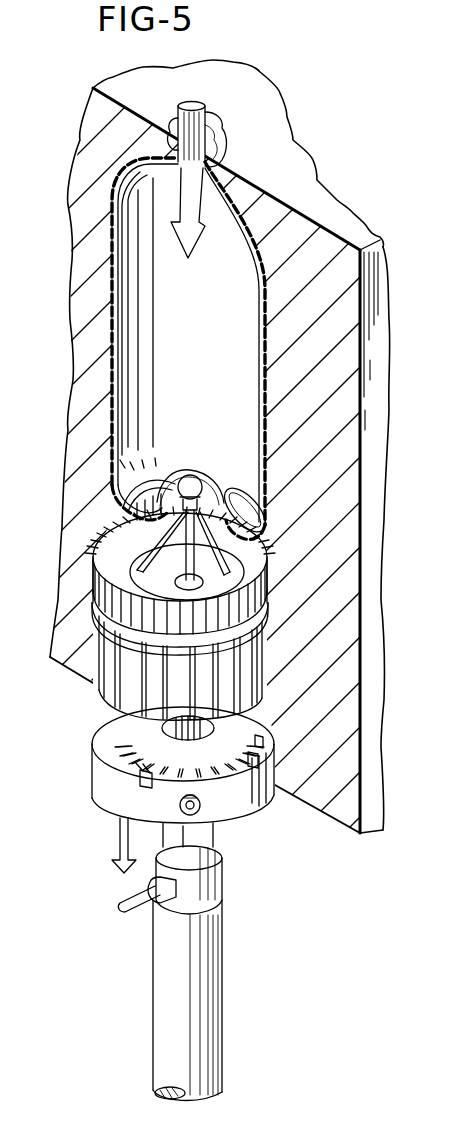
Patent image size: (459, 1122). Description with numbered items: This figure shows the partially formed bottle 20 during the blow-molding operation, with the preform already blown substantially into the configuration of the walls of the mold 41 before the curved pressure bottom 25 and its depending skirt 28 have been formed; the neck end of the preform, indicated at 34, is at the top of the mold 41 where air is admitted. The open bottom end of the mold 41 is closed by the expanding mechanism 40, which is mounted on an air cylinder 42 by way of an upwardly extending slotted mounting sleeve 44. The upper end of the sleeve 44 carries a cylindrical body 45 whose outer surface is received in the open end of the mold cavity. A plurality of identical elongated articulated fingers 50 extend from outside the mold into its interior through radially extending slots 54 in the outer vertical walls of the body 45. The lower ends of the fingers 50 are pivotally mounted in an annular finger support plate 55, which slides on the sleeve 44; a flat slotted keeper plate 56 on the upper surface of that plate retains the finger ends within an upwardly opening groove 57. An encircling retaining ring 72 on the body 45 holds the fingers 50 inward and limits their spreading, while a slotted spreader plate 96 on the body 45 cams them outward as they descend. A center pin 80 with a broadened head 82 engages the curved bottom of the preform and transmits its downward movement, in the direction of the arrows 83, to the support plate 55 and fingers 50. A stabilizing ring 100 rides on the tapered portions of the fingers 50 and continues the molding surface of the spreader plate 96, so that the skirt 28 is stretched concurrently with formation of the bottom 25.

The bottle 20 is at (271, 352).
The curved pressure bottom 25 is at (240, 516).
The skirt 28 is at (152, 493).
The bottle neck 34 is at (213, 128).
The expanding mechanism 40 is at (110, 812).
The mold 41 is at (83, 367).
The air cylinder 42 is at (167, 1000).
The slotted mounting sleeve 44 is at (215, 840).
The cylindrical body 45 is at (107, 690).
The articulated fingers 50 is at (227, 540).
The radially extending slots 54 is at (262, 695).
The finger support plate 55 is at (100, 762).
The keeper plate 56 is at (122, 720).
The groove 57 is at (130, 778).
The retaining ring 72 is at (235, 665).
The center pin 80 is at (203, 522).
The broadened head 82 is at (192, 476).
The arrows 83 is at (117, 861).
The spreader plate 96 is at (205, 598).
The stabilizing ring 100 is at (93, 573).